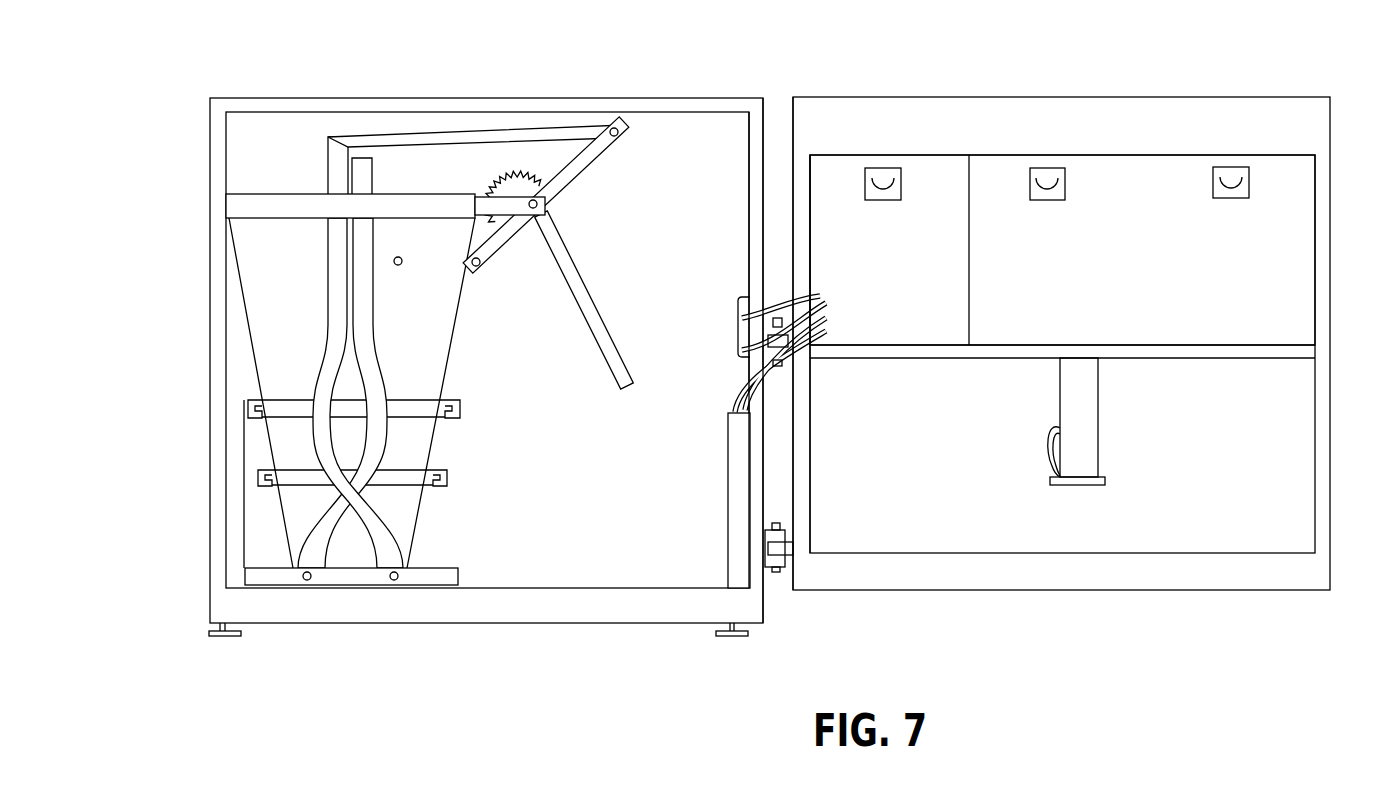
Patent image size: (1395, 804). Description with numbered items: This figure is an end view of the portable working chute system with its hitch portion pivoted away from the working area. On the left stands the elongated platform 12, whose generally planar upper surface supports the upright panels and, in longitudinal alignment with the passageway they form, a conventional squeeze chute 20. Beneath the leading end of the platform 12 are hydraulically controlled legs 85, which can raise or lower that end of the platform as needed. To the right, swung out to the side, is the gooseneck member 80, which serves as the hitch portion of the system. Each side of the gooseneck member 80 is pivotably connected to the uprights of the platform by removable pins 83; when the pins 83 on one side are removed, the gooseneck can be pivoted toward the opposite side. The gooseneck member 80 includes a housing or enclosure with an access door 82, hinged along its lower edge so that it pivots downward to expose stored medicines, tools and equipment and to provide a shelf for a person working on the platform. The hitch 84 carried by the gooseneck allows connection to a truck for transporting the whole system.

The elongated platform 12 is at (403, 615).
The squeeze chute 20 is at (452, 359).
The gooseneck member 80 is at (1222, 92).
The access door 82 is at (1300, 275).
The removable pins 83 is at (772, 525).
The hitch 84 is at (1093, 428).
The hydraulically controlled legs 85 is at (220, 637).